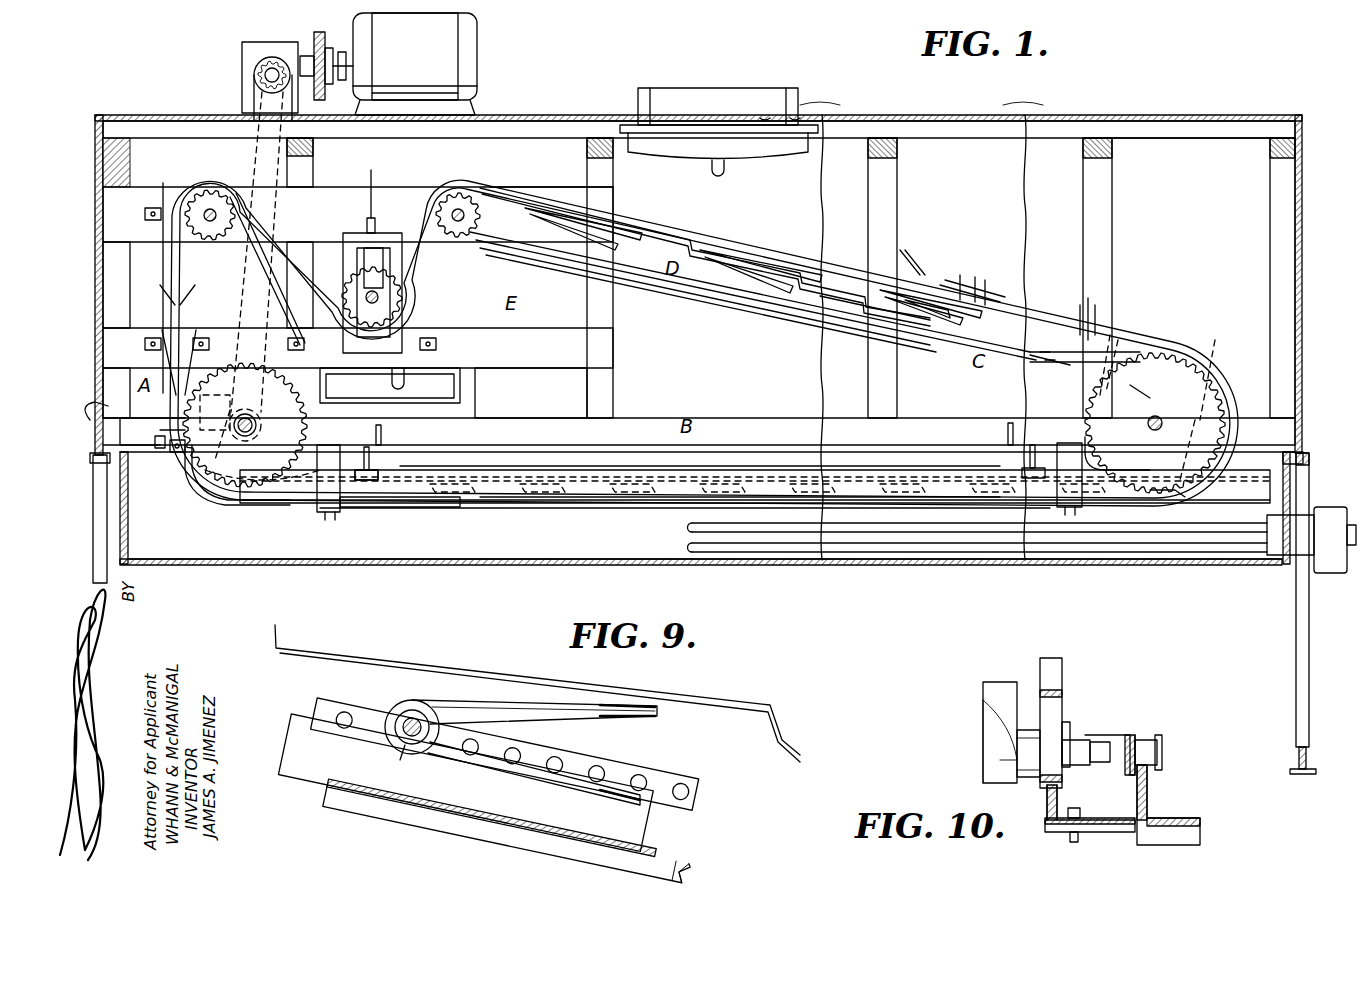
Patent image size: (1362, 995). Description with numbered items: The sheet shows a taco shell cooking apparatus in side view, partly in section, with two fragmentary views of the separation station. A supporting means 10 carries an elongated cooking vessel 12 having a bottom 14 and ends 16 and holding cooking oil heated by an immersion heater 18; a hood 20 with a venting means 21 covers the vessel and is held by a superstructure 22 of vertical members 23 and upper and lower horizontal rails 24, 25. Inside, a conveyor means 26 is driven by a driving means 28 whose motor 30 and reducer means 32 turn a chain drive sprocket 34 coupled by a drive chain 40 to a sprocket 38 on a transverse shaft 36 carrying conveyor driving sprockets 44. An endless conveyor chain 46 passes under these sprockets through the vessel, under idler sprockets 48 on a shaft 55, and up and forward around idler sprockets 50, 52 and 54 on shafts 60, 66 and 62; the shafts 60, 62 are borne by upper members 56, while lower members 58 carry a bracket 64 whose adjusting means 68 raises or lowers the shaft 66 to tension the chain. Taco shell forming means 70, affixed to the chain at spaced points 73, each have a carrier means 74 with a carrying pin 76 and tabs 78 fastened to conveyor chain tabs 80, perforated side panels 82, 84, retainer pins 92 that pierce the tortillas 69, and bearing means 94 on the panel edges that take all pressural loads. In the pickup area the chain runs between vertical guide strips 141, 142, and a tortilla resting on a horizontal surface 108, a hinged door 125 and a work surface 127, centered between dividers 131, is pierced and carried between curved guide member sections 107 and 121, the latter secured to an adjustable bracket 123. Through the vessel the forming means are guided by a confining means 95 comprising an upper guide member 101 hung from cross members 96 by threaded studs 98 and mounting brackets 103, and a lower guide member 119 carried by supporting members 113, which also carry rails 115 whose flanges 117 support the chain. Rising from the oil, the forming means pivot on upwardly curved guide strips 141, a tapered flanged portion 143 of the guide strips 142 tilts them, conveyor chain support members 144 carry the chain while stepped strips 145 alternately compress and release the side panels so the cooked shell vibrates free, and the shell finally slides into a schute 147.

In FIG. 1, the supporting means 10 is at (93, 558).
In FIG. 9, the supporting means 10 is at (410, 625).
In FIG. 1, the cooking vessel 12 is at (662, 566).
In FIG. 1, the bottom 14 is at (935, 560).
In FIG. 1, the ends 16 is at (95, 532).
In FIG. 1, the thermostatic controlled immersion heater 18 is at (1322, 512).
In FIG. 1, the hood 20 is at (1300, 150).
In FIG. 1, the venting means 21 is at (800, 88).
In FIG. 1, the superstructure 22 is at (565, 121).
In FIG. 1, the vertical members 23 is at (118, 172).
In FIG. 1, the upper horizontal rail 24 is at (1212, 130).
In FIG. 1, the lower horizontal rail 25 is at (745, 420).
In FIG. 1, the conveyor means 26 is at (678, 500).
In FIG. 1, the driving means 28 is at (403, 59).
In FIG. 1, the motor 30 is at (478, 70).
In FIG. 1, the reducer means 32 is at (262, 46).
In FIG. 1, the chain drive sprocket 34 is at (262, 75).
In FIG. 1, the transverse shaft 36 is at (245, 425).
In FIG. 1, the sprocket 38 is at (256, 412).
In FIG. 1, the drive chain 40 is at (275, 218).
In FIG. 1, the conveyor driving sprockets 44 is at (252, 478).
In FIG. 1, the conveyor chain 46 is at (448, 188).
In FIG. 9, the conveyor chain 46 is at (672, 770).
In FIG. 10, the conveyor chain 46 is at (1145, 738).
In FIG. 1, the idler sprockets 48 is at (1168, 423).
In FIG. 1, the idler sprockets 50 is at (470, 228).
In FIG. 1, the idler sprockets 52 is at (407, 297).
In FIG. 1, the idler sprockets 54 is at (210, 240).
In FIG. 1, the shaft 55 is at (1150, 430).
In FIG. 1, the upper horizontal members 56 is at (563, 240).
In FIG. 1, the lower horizontal members 58 is at (552, 368).
In FIG. 1, the shaft 60 is at (472, 212).
In FIG. 1, the shaft 62 is at (210, 211).
In FIG. 1, the bracket 64 is at (374, 254).
In FIG. 1, the shaft 66 is at (380, 297).
In FIG. 1, the adjusting means 68 is at (388, 236).
In FIG. 9, the tortillas 69 is at (400, 708).
In FIG. 10, the tortillas 69 is at (985, 720).
In FIG. 1, the taco shell forming means 70 is at (500, 190).
In FIG. 9, the taco shell forming means 70 is at (518, 741).
In FIG. 9, the spaced points 73 is at (405, 748).
In FIG. 9, the carrier means 74 is at (412, 716).
In FIG. 10, the carrier means 74 is at (1070, 735).
In FIG. 1, the carrying pin 76 is at (1162, 365).
In FIG. 10, the carrying pin 76 is at (1078, 755).
In FIG. 10, the tabs 78 is at (1075, 735).
In FIG. 10, the conveyor chain tabs 80 is at (1125, 732).
In FIG. 1, the side panel 82 is at (950, 300).
In FIG. 9, the side panel 82 is at (480, 705).
In FIG. 10, the side panel 82 is at (976, 713).
In FIG. 1, the side panel 84 is at (950, 320).
In FIG. 9, the side panel 84 is at (440, 745).
In FIG. 9, the retainer pins 92 is at (465, 783).
In FIG. 9, the bearing means 94 is at (637, 705).
In FIG. 10, the bearing means 94 is at (1040, 715).
In FIG. 1, the guide means 95 is at (212, 500).
In FIG. 1, the cross members 96 is at (384, 436).
In FIG. 1, the threaded studs 98 is at (372, 460).
In FIG. 1, the upper guide member 101 is at (490, 472).
In FIG. 1, the mounting brackets 103 is at (375, 478).
In FIG. 1, the upwardly curved guide member section 107 is at (240, 465).
In FIG. 1, the horizontally disposed surface 108 is at (218, 425).
In FIG. 1, the supporting members 113 is at (325, 490).
In FIG. 1, the rails 115 is at (380, 505).
In FIG. 1, the flanges 117 is at (460, 508).
In FIG. 1, the lower guide member 119 is at (565, 503).
In FIG. 1, the lower curved guide member section 121 is at (200, 495).
In FIG. 1, the bracket 123 is at (168, 450).
In FIG. 1, the hinged door 125 is at (170, 422).
In FIG. 1, the horizontal work surface 127 is at (85, 421).
In FIG. 1, the dividers 131 is at (205, 410).
In FIG. 1, the guide strips 141 is at (1228, 500).
In FIG. 1, the guide strips 142 is at (210, 280).
In FIG. 9, the guide strips 142 is at (600, 828).
In FIG. 10, the guide strips 142 is at (1055, 810).
In FIG. 1, the tapered flanged portion 143 is at (905, 300).
In FIG. 1, the conveyor chain support members 144 is at (1050, 354).
In FIG. 9, the conveyor chain support members 144 is at (712, 830).
In FIG. 10, the conveyor chain support members 144 is at (1147, 800).
In FIG. 1, the stepped strips 145 is at (838, 265).
In FIG. 9, the stepped strips 145 is at (718, 700).
In FIG. 10, the stepped strips 145 is at (1056, 665).
In FIG. 1, the schute 147 is at (448, 385).